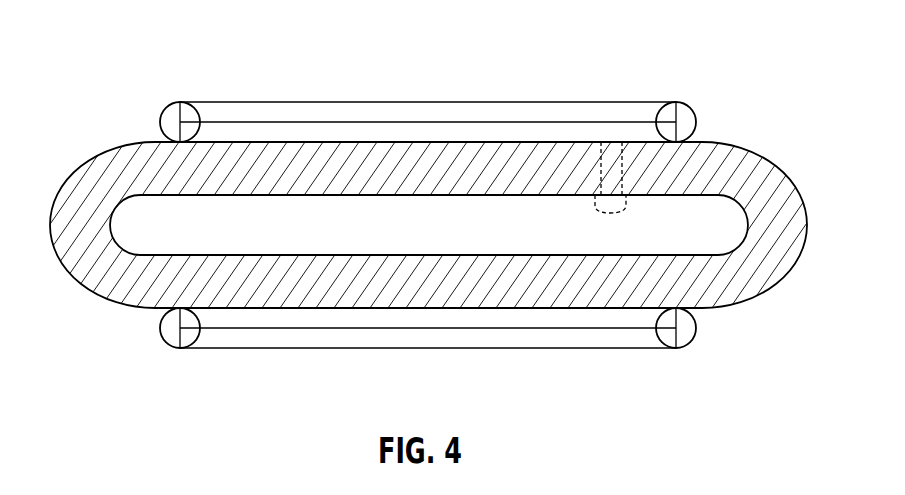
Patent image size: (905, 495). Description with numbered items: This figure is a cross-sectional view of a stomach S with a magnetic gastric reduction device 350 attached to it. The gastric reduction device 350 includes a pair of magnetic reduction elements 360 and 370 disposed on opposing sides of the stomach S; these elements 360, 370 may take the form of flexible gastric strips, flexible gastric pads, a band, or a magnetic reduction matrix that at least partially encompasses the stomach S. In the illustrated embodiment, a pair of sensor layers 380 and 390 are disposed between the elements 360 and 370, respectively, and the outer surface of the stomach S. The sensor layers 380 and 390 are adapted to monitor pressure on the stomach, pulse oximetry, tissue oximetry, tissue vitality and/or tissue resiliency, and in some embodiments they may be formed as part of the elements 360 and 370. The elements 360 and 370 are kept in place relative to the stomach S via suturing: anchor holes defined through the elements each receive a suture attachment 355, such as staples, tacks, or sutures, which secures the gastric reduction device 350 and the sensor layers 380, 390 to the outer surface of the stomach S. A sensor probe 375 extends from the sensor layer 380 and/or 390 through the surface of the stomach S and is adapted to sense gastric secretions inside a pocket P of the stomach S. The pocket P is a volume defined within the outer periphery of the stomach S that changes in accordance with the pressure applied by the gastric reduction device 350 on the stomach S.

The gastric reduction device 350 is at (628, 57).
The suture attachment 355 is at (160, 122).
The magnetic reduction element 360 is at (552, 113).
The magnetic reduction element 370 is at (552, 333).
The sensor probe 375 is at (608, 169).
The sensor layer 380 is at (308, 130).
The sensor layer 390 is at (282, 320).
The stomach S is at (90, 156).
The pocket P is at (140, 237).